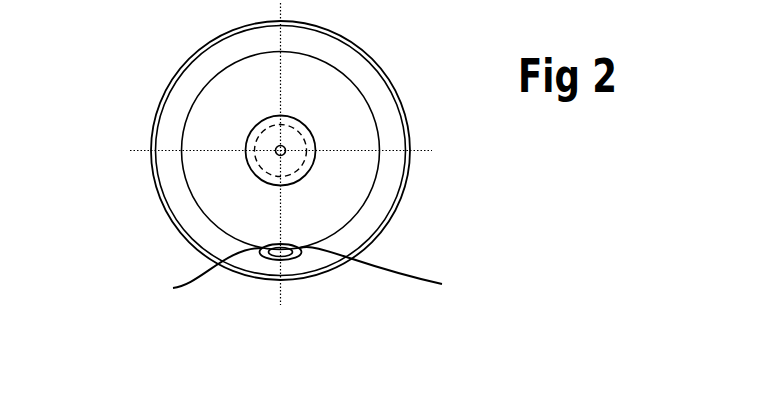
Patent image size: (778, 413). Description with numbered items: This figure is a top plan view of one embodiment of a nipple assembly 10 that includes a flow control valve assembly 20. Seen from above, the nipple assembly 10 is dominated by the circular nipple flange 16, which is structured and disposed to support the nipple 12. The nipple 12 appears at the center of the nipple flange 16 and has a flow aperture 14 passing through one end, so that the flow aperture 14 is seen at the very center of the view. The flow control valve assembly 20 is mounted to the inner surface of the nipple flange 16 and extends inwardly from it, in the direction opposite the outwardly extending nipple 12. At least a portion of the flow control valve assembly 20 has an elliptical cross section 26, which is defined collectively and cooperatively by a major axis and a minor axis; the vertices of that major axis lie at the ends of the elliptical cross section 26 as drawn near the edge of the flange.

The nipple assembly 10 is at (140, 66).
The nipple 12 is at (354, 106).
The flow aperture 14 is at (356, 206).
The nipple flange 16 is at (329, 150).
The flow control valve assembly 20 is at (321, 262).
The elliptical cross section 26 is at (258, 295).